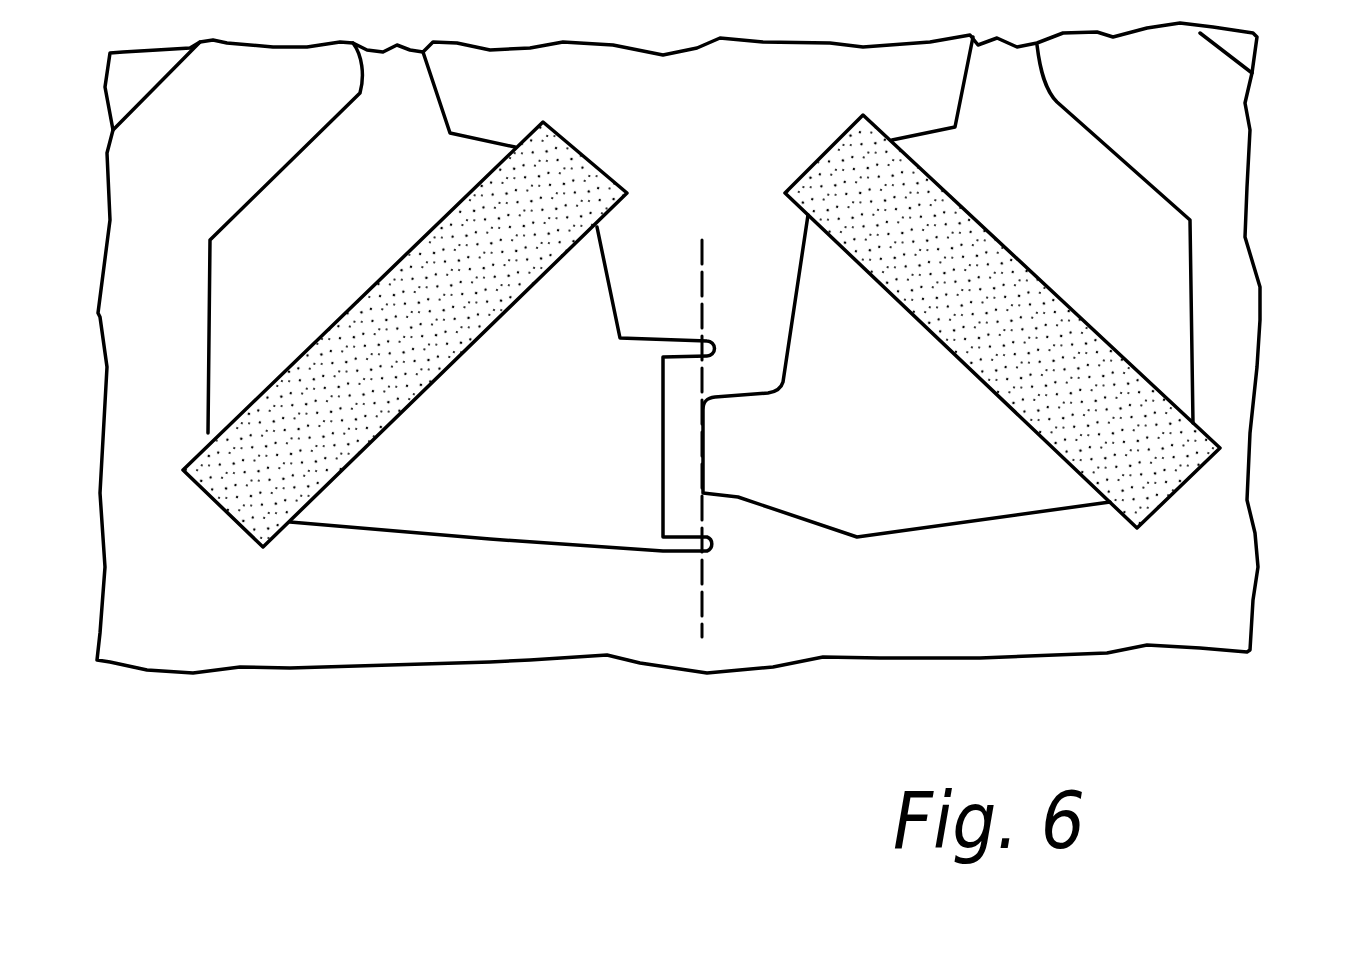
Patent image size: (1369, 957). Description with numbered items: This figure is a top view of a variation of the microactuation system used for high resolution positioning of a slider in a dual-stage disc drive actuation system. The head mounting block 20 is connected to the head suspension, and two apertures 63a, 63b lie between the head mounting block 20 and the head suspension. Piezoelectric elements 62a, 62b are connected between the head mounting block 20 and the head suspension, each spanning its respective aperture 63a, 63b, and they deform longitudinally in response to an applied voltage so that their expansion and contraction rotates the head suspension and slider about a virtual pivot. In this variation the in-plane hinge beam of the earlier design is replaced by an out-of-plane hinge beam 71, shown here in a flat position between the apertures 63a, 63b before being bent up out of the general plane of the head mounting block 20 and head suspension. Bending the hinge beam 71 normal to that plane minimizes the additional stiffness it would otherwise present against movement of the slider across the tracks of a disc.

The head mounting block 20 is at (1222, 613).
The piezoelectric element 62a is at (383, 300).
The piezoelectric element 62b is at (1040, 320).
The aperture 63a is at (260, 295).
The aperture 63b is at (967, 473).
The out-of-plane hinge beam 71 is at (687, 460).